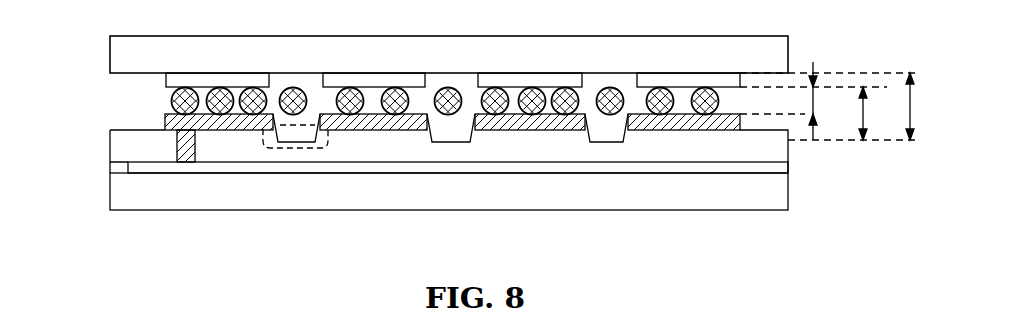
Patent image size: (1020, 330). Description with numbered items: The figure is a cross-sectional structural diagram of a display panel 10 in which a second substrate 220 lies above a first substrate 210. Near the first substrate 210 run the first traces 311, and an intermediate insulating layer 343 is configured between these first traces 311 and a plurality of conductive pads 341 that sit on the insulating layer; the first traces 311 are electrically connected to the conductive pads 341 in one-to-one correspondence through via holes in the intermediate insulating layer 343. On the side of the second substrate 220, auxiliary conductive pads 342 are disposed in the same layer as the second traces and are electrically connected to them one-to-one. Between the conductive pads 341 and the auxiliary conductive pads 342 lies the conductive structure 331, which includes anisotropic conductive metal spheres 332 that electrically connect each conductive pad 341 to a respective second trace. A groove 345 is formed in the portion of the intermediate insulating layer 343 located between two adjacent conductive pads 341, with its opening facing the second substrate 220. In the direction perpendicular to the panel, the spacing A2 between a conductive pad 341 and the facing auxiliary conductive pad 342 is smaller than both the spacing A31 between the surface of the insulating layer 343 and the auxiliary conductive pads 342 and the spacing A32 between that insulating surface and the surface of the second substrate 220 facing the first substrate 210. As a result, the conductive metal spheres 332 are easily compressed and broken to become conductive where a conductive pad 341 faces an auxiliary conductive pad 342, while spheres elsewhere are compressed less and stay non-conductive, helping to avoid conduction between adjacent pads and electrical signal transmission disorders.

The display panel 10 is at (156, 28).
The second substrate 220 is at (110, 50).
The auxiliary conductive pads 342 is at (166, 80).
The anisotropic conductive metal sphere 332 is at (173, 90).
The conductive structure 331 is at (445, 101).
The conductive pads 341 is at (163, 115).
The intermediate insulating layer 343 is at (110, 145).
The first traces 311 is at (128, 165).
The first substrate 210 is at (110, 201).
The groove 345 is at (305, 148).
The spacing between conductive pad and auxiliary conductive pad A2 is at (813, 101).
The spacing between insulating layer surface and auxiliary conductive pads A31 is at (863, 113).
The spacing between insulating layer surface and second substrate surface A32 is at (833, 106).